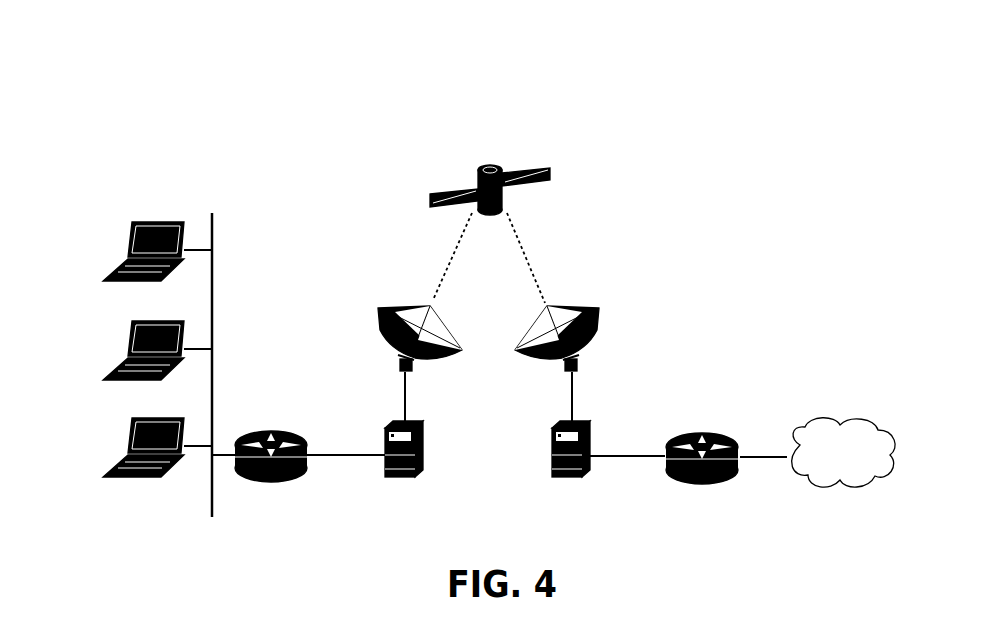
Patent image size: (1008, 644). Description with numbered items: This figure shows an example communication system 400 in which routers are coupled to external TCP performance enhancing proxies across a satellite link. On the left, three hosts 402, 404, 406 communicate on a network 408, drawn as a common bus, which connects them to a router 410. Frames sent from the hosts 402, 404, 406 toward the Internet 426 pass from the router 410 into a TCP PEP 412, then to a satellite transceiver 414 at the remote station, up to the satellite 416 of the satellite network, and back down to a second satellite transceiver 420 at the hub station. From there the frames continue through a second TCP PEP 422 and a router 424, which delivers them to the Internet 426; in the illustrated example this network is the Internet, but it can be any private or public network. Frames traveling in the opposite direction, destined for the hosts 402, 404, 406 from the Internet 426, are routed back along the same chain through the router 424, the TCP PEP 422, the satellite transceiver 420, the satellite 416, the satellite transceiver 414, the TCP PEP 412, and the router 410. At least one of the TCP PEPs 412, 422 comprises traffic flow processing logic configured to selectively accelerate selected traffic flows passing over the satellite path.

The communication system 400 is at (232, 90).
The host 402 is at (117, 266).
The host 404 is at (117, 362).
The host 406 is at (117, 458).
The network 408 is at (213, 262).
The router 410 is at (298, 473).
The TCP PEP 412 is at (427, 460).
The satellite transceiver 414 is at (380, 310).
The satellite 416 is at (502, 197).
The satellite transceiver 420 is at (597, 318).
The TCP PEP 422 is at (550, 452).
The router 424 is at (728, 477).
The Internet 426 is at (840, 423).